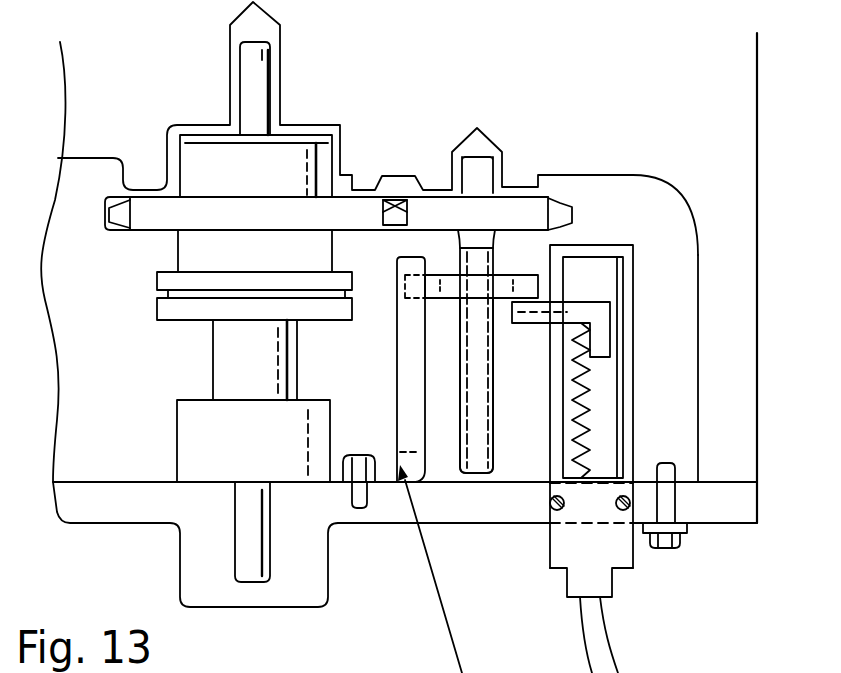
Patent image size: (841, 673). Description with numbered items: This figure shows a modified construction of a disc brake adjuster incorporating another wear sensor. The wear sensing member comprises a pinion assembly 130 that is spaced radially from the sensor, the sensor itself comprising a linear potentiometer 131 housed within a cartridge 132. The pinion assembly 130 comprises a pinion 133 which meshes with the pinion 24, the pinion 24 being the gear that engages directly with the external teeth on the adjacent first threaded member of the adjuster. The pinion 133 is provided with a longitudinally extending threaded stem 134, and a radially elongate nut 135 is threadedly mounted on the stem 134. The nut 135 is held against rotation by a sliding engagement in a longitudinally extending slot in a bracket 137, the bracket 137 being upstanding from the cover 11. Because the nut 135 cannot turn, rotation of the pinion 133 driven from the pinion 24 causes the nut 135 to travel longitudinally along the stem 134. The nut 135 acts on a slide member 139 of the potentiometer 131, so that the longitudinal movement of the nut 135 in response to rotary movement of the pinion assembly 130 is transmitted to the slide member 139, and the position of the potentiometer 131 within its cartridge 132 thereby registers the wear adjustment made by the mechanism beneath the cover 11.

The cover 11 is at (388, 505).
The pinion 24 is at (296, 213).
The pinion assembly 130 is at (443, 208).
The linear potentiometer 131 is at (612, 360).
The cartridge 132 is at (625, 400).
The pinion 133 is at (418, 208).
The threaded stem 134 is at (477, 463).
The nut 135 is at (450, 290).
The bracket 137 is at (408, 408).
The slide member 139 is at (577, 308).